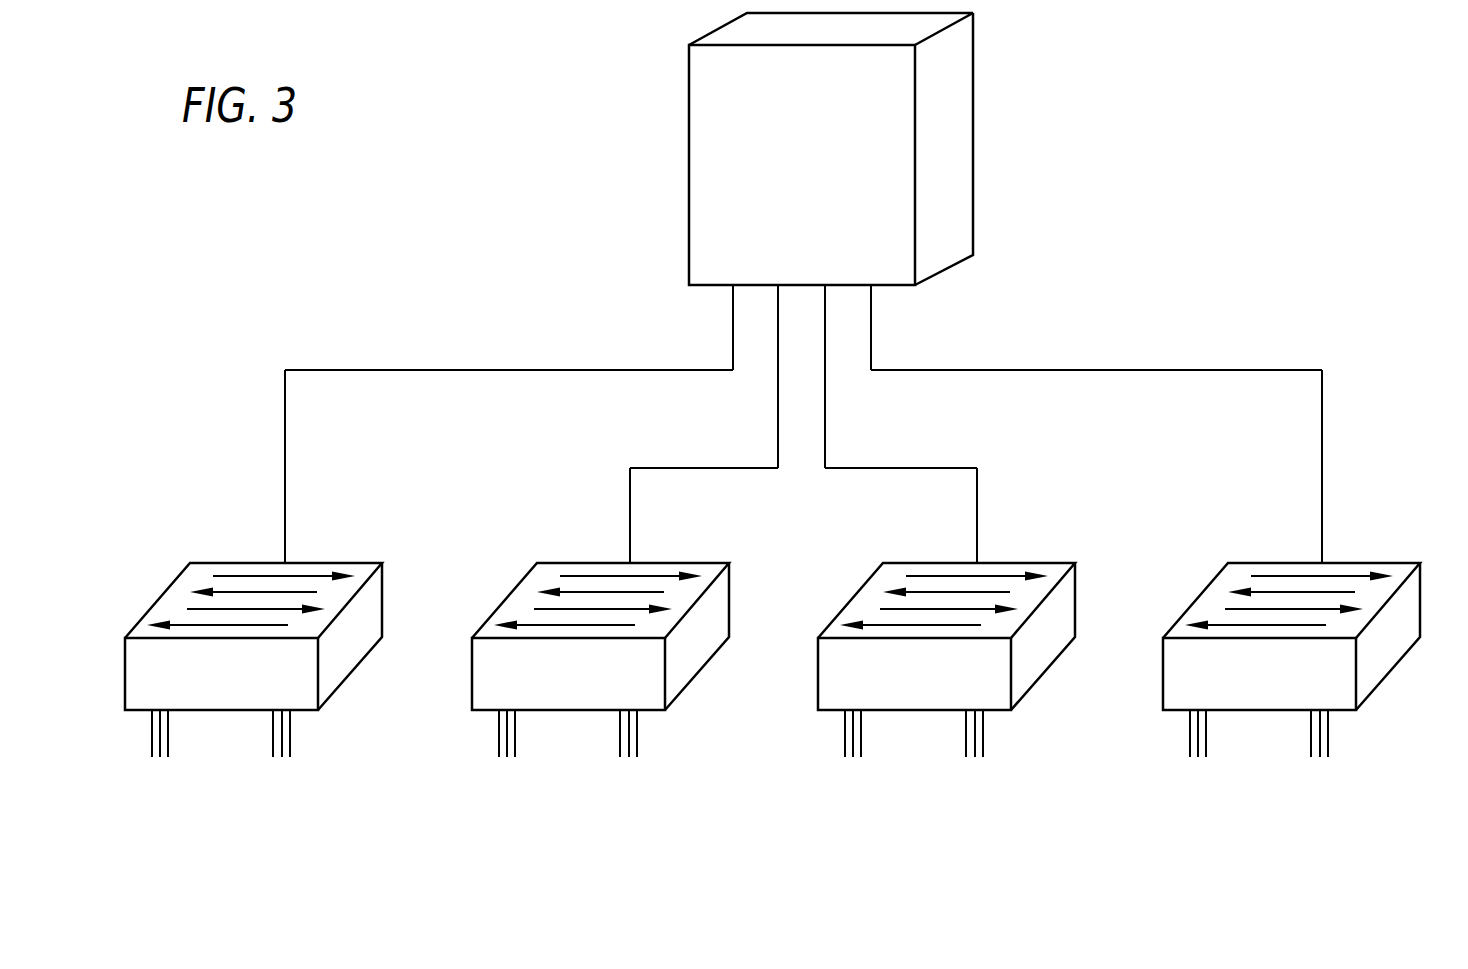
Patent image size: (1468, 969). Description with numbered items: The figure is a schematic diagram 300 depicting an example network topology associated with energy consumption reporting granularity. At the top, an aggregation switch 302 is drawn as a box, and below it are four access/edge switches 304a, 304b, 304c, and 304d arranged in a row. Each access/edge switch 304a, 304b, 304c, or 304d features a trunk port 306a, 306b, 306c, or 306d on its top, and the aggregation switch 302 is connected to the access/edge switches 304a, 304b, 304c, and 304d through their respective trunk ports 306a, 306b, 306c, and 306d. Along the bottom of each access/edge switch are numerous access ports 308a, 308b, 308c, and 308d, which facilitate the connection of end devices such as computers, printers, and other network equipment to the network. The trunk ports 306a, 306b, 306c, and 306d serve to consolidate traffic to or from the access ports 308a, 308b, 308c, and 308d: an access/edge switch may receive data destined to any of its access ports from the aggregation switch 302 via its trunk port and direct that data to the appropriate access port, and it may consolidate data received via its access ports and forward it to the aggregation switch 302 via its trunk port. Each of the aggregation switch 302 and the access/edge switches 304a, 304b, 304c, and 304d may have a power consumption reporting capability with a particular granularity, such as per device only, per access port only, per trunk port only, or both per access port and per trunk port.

The schematic diagram 300 is at (1300, 142).
The aggregation switch 302 is at (689, 138).
The access/edge switch 304a is at (158, 597).
The access/edge switch 304b is at (579, 618).
The access/edge switch 304c is at (925, 618).
The access/edge switch 304d is at (1270, 618).
The trunk port 306a is at (285, 530).
The trunk port 306b is at (628, 515).
The trunk port 306c is at (976, 515).
The trunk port 306d is at (1324, 466).
The access ports 308a is at (152, 735).
The access ports 308b is at (535, 763).
The access ports 308c is at (881, 763).
The access ports 308d is at (1226, 763).